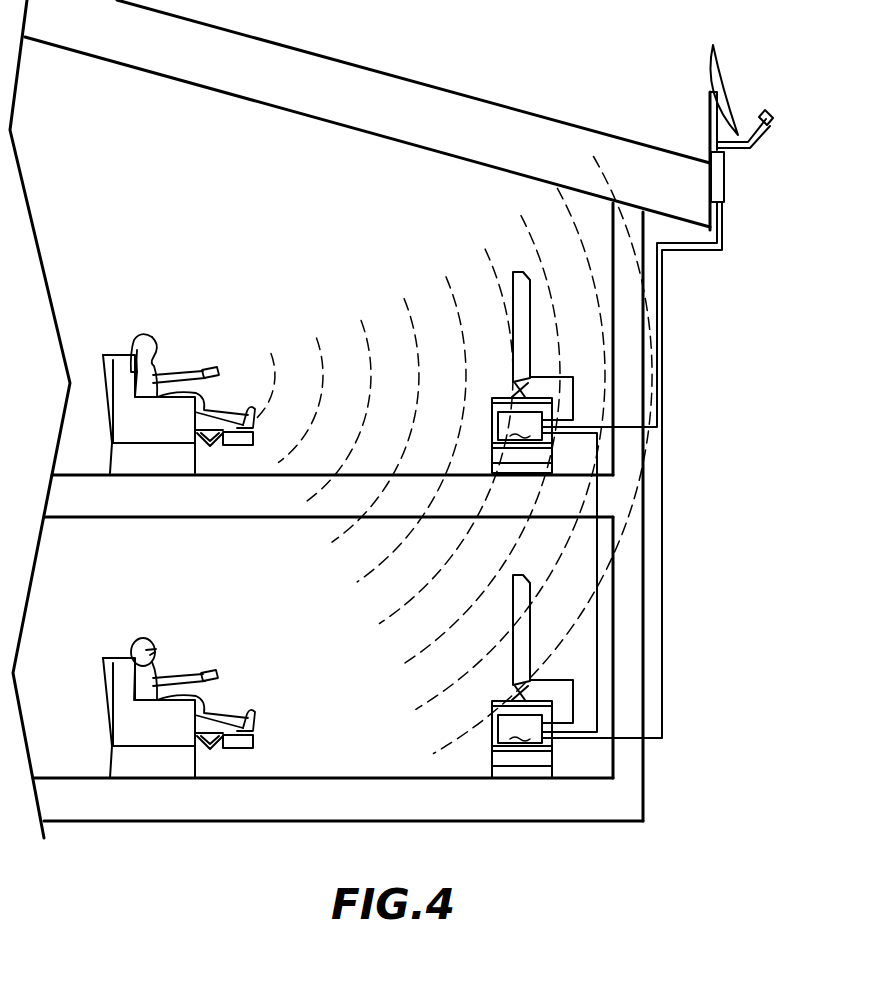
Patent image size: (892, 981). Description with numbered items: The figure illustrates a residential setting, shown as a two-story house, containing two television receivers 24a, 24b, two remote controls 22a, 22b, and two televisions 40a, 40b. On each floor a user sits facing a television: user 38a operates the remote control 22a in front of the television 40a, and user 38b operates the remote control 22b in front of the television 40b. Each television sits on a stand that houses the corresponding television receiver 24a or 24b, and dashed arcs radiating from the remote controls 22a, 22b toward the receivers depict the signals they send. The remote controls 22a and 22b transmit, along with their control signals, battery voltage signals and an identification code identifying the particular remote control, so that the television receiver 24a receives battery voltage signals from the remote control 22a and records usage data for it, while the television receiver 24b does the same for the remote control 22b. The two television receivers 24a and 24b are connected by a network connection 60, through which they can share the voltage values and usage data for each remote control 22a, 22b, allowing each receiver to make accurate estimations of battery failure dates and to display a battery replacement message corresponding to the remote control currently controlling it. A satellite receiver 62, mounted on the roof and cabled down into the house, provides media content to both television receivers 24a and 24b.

The satellite receiver 62 is at (725, 73).
The network connection 60 is at (597, 529).
The television 40a is at (517, 272).
The television 40b is at (517, 575).
The television receiver 24a is at (520, 426).
The television receiver 24b is at (520, 729).
The user 38a is at (143, 337).
The user 38b is at (142, 638).
The remote control 22a is at (213, 368).
The remote control 22b is at (212, 671).